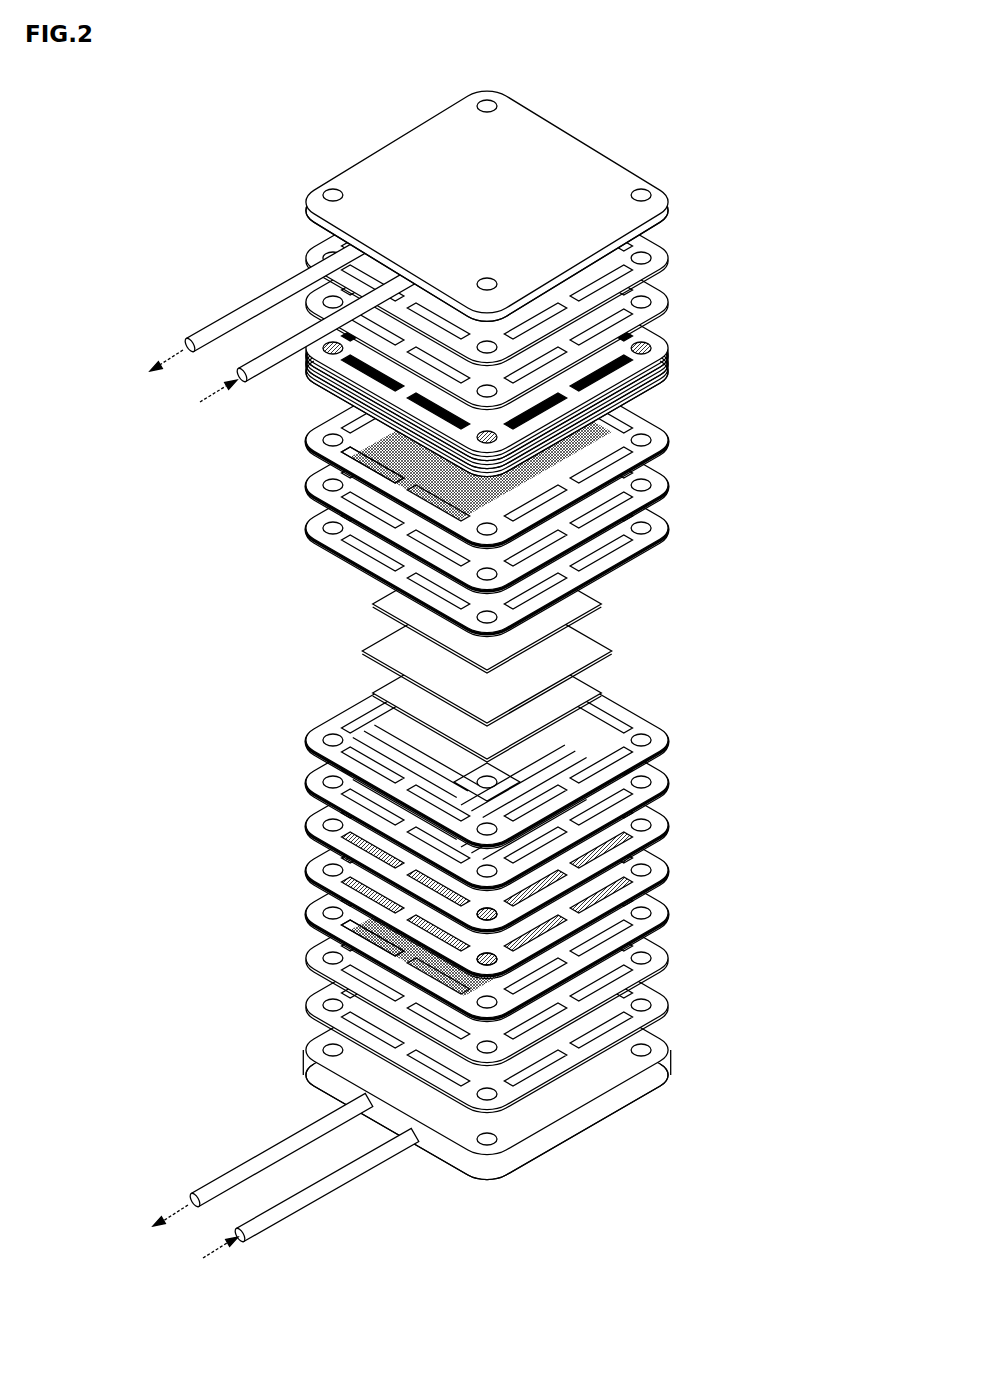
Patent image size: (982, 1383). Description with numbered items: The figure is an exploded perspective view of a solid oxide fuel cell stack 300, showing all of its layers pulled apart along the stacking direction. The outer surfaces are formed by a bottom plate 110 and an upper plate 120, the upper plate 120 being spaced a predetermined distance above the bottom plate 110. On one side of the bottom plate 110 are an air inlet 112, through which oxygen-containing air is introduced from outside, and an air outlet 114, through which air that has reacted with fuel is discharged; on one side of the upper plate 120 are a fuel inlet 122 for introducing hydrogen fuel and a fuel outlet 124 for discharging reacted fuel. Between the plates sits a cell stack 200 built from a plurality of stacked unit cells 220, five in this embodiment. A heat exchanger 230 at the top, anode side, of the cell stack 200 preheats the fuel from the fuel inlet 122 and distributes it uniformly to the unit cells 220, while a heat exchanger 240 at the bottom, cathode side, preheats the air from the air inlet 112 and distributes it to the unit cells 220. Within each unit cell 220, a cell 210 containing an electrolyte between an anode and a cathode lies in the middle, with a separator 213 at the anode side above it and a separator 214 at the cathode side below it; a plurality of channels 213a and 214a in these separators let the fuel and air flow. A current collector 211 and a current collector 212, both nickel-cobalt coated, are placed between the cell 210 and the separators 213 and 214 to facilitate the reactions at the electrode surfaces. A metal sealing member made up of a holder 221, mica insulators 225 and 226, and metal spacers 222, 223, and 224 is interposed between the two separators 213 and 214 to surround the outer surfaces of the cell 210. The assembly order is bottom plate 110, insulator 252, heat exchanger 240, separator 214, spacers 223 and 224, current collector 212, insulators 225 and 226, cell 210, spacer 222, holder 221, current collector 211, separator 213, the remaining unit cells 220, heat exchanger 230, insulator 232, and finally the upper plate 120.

The solid oxide fuel cell stack 300 is at (308, 118).
The upper plate 120 is at (612, 172).
The fuel outlet 124 is at (282, 292).
The fuel inlet 122 is at (283, 357).
The insulator 232 is at (655, 246).
The heat exchanger 230 is at (655, 290).
The cell stack 200 is at (676, 352).
The unit cell 220 is at (575, 678).
The separator 213 is at (655, 428).
The channel 213a is at (340, 480).
The holder 221 is at (655, 473).
The spacer 222 is at (655, 516).
The current collector 211 is at (583, 597).
The cell 210 is at (578, 650).
The current collector 212 is at (582, 688).
The insulator 225 is at (655, 728).
The insulator 226 is at (655, 770).
The spacer 223 is at (655, 813).
The spacer 224 is at (655, 858).
The separator 214 is at (655, 901).
The channel 214a is at (340, 958).
The heat exchanger 240 is at (655, 946).
The insulator 252 is at (655, 993).
The bottom plate 110 is at (655, 1038).
The air outlet 114 is at (303, 1133).
The air inlet 112 is at (338, 1190).